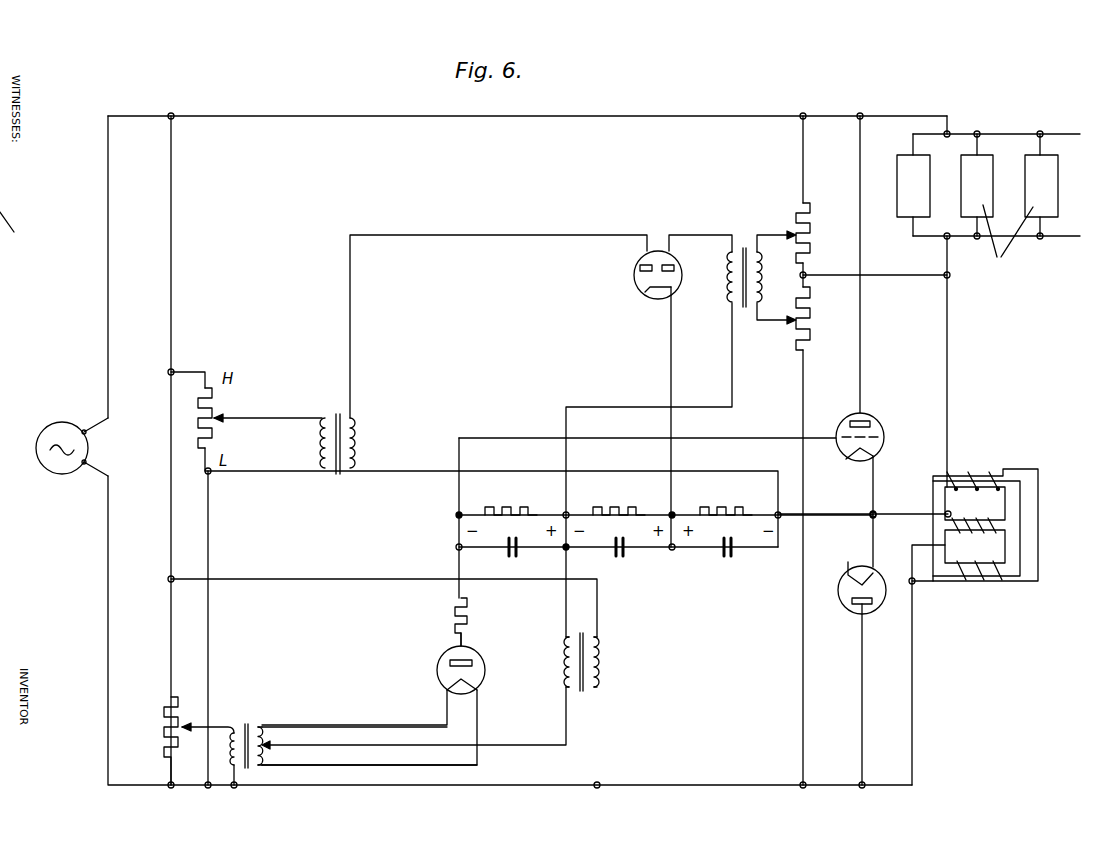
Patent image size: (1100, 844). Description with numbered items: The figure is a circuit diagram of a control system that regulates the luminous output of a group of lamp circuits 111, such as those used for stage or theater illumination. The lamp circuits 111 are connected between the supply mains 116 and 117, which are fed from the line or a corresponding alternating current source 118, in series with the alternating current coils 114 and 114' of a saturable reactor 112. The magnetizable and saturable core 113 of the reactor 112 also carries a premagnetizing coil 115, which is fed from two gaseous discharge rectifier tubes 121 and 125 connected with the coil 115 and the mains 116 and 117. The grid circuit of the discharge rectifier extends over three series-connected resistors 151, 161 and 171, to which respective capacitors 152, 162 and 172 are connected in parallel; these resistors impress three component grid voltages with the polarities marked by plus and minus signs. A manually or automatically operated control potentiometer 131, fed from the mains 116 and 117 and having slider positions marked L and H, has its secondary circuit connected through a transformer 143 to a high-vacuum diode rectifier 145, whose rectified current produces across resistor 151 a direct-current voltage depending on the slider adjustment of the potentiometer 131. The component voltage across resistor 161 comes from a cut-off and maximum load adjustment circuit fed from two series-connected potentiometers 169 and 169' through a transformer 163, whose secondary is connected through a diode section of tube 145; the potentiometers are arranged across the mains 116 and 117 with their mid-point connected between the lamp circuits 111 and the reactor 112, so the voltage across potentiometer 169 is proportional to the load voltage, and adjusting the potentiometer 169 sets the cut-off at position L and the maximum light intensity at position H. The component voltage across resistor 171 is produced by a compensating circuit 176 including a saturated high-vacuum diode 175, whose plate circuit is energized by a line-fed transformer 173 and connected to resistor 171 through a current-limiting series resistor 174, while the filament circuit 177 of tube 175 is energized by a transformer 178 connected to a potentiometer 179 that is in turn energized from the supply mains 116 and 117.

The lamp circuits 111 is at (1014, 122).
The saturable reactor 112 is at (1072, 536).
The magnetizable and saturable core 113 is at (940, 499).
The alternating current coil 114 is at (976, 467).
The alternating current coil 114' is at (979, 588).
The premagnetizing coil 115 is at (963, 522).
The supply main 116 is at (453, 117).
The supply main 117 is at (106, 559).
The alternating current source 118 is at (36, 446).
The gaseous discharge rectifier tube 121 is at (870, 420).
The gaseous discharge rectifier tube 125 is at (880, 618).
The control potentiometer 131 is at (198, 422).
The transformer 143 is at (324, 474).
The high-vacuum diode rectifier 145 is at (634, 279).
The resistor 151 is at (712, 510).
The capacitor 152 is at (732, 554).
The resistor 161 is at (604, 510).
The capacitor 162 is at (627, 554).
The transformer 163 is at (743, 245).
The potentiometer 169 is at (822, 233).
The potentiometer 169' is at (824, 318).
The resistor 171 is at (494, 510).
The capacitor 172 is at (517, 552).
The line-fed transformer 173 is at (600, 660).
The current-limiting series resistor 174 is at (454, 602).
The saturated high-vacuum diode 175 is at (446, 659).
The amplifier circuit 176 is at (538, 636).
The filament circuit 177 is at (342, 726).
The transformer 178 is at (242, 736).
The potentiometer 179 is at (164, 728).